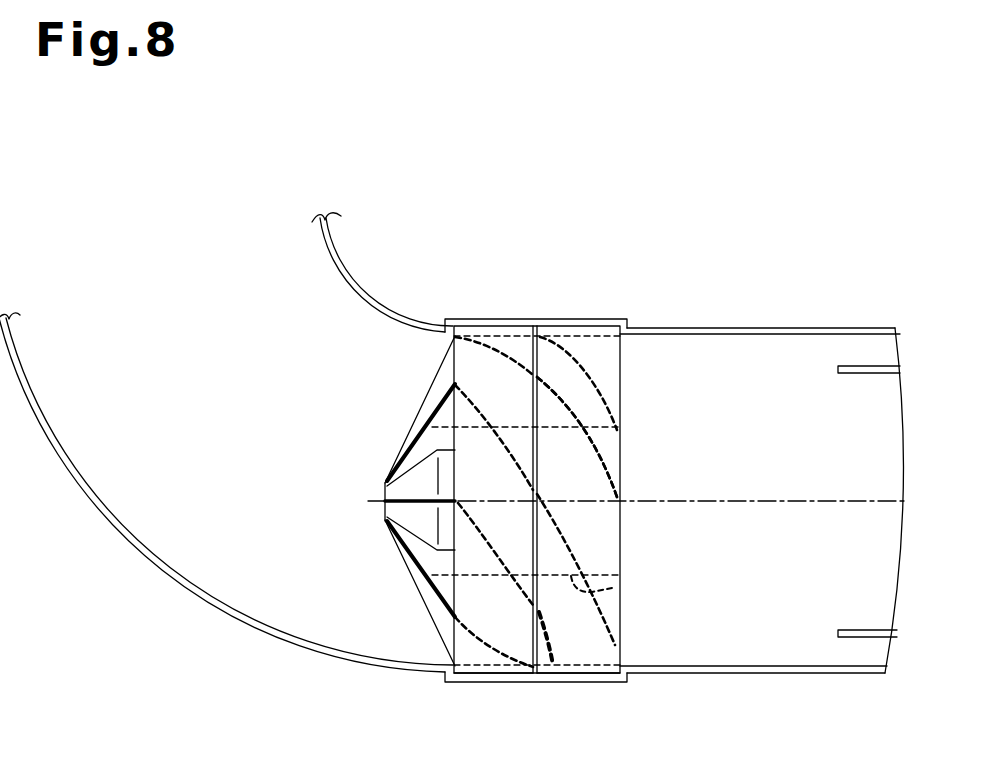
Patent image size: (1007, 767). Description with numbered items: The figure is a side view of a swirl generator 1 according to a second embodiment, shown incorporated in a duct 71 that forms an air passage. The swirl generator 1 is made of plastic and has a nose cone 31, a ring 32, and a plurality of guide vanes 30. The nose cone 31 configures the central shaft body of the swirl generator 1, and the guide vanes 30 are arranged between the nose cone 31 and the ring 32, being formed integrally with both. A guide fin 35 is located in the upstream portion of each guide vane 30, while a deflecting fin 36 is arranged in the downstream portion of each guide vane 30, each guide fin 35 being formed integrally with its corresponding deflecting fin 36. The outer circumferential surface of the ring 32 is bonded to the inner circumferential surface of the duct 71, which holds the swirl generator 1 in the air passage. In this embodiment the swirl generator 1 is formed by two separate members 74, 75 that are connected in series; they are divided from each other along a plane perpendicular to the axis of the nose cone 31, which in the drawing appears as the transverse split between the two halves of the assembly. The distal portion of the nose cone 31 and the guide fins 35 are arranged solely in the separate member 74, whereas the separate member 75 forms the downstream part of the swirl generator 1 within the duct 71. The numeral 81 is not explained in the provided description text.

The swirl generator 1 is at (354, 505).
The guide vanes 30 is at (428, 389).
The nose cone 31 is at (418, 482).
The ring 32 is at (488, 684).
The guide fin 35 is at (445, 595).
The deflecting fin 36 is at (612, 588).
The duct 71 is at (771, 327).
The separate member 74 is at (408, 568).
The separate member 75 is at (622, 496).
The housing 81 is at (622, 279).